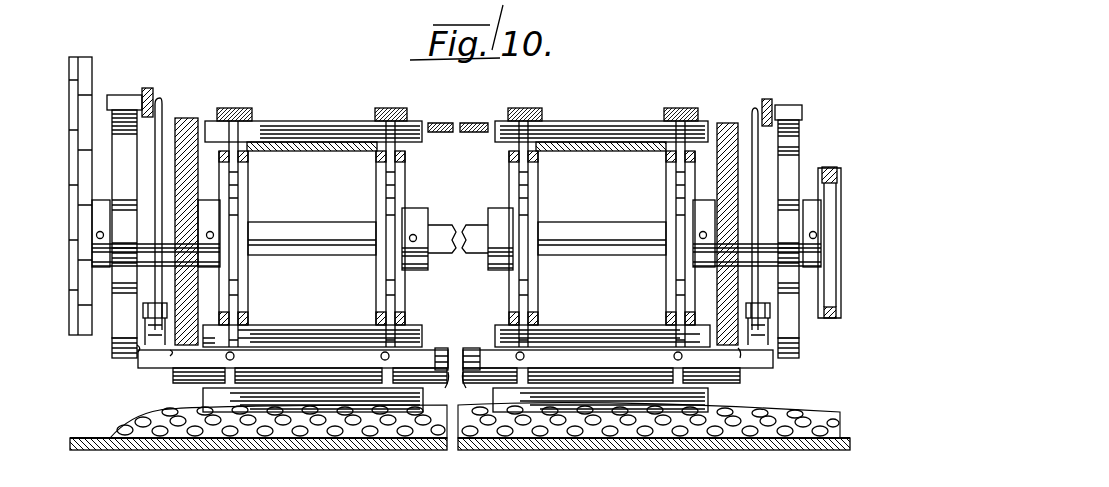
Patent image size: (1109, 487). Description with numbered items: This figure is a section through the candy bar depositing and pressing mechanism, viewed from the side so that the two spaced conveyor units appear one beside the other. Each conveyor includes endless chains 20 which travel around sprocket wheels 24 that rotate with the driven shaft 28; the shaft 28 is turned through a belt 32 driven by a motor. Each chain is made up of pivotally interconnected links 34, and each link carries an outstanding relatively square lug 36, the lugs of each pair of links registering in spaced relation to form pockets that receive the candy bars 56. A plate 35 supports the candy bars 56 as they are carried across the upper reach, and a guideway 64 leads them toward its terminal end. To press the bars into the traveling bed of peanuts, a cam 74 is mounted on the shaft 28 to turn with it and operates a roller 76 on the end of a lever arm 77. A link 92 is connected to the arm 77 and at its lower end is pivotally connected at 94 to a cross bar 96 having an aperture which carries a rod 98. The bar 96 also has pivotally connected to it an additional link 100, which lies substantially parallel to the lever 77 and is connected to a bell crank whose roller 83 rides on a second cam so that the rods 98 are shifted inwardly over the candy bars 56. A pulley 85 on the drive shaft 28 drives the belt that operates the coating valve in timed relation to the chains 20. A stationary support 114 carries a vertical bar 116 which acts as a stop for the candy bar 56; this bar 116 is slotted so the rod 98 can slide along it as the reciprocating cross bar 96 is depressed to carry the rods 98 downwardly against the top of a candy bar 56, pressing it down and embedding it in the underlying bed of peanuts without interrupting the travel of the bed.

The endless chains 20 is at (670, 150).
The sprocket 24 is at (394, 190).
The shaft 28 is at (310, 225).
The belt 32 is at (95, 62).
The links 34 is at (405, 152).
The plate 35 is at (292, 151).
The lug 36 is at (242, 138).
The candy bars 56 is at (320, 335).
The guideway 64 is at (233, 108).
The cam 74 is at (118, 356).
The roller 76 is at (118, 96).
The lever arm 77 is at (152, 92).
The roller 83 is at (828, 167).
The pulley 85 is at (840, 168).
The link 92 is at (163, 118).
The pivotal connection 94 is at (168, 352).
The cross bar 96 is at (425, 352).
The rod 98 is at (235, 356).
The link 100 is at (152, 362).
The support 114 is at (455, 348).
The vertical bar 116 is at (437, 382).